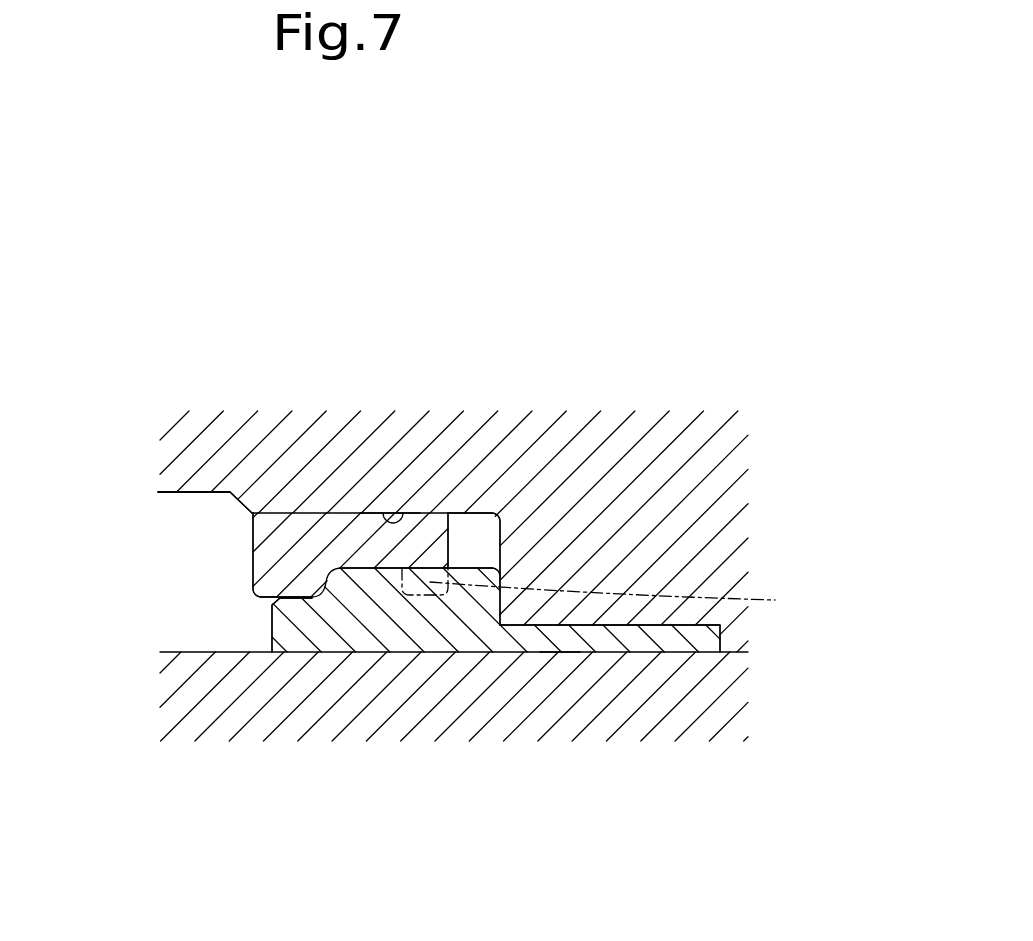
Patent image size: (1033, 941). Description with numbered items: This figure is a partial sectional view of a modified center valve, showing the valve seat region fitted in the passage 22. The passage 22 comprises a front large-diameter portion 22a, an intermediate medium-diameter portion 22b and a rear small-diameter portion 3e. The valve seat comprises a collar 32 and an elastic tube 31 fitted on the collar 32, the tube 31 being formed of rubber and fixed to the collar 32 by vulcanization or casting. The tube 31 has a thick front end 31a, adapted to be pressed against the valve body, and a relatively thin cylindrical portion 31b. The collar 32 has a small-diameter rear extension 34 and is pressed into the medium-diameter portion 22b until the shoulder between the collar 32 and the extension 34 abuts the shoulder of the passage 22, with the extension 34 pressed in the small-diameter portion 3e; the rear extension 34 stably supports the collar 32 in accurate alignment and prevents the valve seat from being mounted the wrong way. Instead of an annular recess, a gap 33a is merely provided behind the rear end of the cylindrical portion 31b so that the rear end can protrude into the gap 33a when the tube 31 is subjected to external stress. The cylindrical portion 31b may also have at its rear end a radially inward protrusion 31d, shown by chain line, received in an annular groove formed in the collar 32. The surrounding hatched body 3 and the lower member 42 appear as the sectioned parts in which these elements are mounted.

The housing body 3 is at (293, 473).
The rear small-diameter portion 3e is at (547, 653).
The passage 22 is at (260, 617).
The front large-diameter portion 22a is at (205, 493).
The intermediate medium-diameter portion 22b is at (383, 513).
The elastic tube 31 is at (347, 536).
The front end 31a is at (262, 567).
The cylindrical portion 31b is at (437, 522).
The radially inward protrusion 31d is at (621, 598).
The collar 32 is at (427, 627).
The gap 33a is at (480, 545).
The rear extension 34 is at (725, 635).
The mating member 42 is at (235, 703).